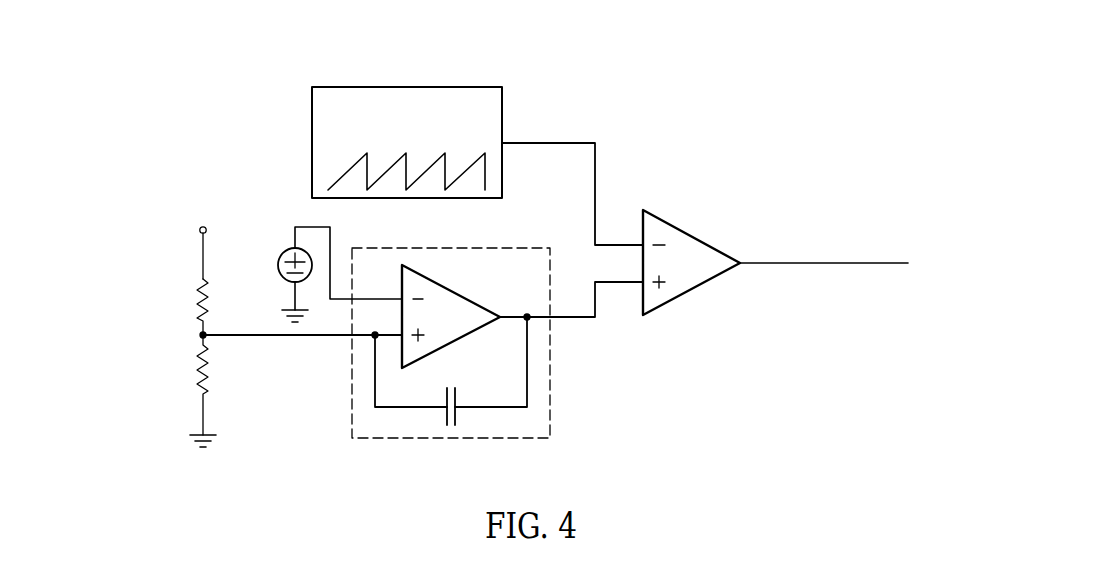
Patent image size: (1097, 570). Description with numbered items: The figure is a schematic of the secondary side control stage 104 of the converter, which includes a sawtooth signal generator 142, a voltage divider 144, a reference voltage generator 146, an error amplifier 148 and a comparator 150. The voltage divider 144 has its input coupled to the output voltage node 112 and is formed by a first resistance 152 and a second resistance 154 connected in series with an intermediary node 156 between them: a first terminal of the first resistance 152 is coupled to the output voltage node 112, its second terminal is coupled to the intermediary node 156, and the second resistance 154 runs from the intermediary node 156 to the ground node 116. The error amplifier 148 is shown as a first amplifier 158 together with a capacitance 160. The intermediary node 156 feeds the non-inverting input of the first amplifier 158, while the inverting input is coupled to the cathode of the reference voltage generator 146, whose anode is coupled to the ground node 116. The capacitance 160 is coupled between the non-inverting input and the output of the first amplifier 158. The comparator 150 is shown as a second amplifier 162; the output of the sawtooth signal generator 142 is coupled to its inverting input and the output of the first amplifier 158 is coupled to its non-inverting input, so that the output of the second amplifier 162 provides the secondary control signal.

The secondary side control stage 104 is at (546, 86).
The output voltage node 112 is at (200, 227).
The ground node 116 is at (197, 434).
The sawtooth signal generator 142 is at (367, 86).
The voltage divider 144 is at (229, 320).
The reference voltage generator 146 is at (281, 252).
The error amplifier 148 is at (496, 343).
The comparator 150 is at (775, 231).
The first resistance 152 is at (198, 280).
The second resistance 154 is at (208, 377).
The intermediary node 156 is at (200, 337).
The first amplifier 158 is at (458, 290).
The capacitance 160 is at (457, 418).
The second amplifier 162 is at (692, 290).